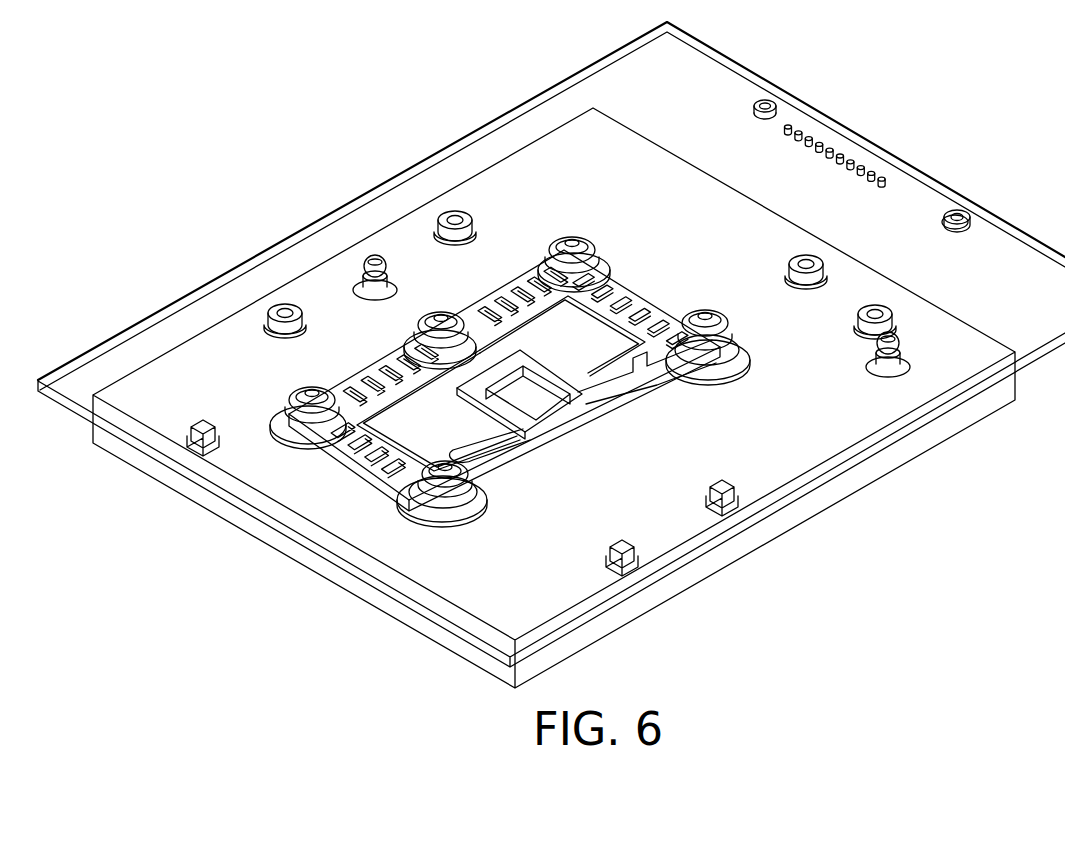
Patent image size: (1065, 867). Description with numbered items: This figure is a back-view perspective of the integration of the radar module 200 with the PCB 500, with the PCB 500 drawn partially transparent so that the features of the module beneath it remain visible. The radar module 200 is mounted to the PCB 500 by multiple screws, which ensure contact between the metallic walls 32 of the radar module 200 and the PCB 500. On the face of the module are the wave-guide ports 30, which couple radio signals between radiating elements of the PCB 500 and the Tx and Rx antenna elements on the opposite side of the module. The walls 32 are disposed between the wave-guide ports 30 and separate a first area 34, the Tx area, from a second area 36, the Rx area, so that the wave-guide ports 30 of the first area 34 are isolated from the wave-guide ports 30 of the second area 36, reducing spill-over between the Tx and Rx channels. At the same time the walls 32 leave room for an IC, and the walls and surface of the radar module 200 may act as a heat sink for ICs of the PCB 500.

The PCB 500 is at (886, 121).
The radar module 200 is at (805, 556).
The wave-guide ports 30 is at (648, 270).
The metallic wall 32 is at (633, 403).
The first area 34 is at (445, 437).
The second area 36 is at (594, 355).